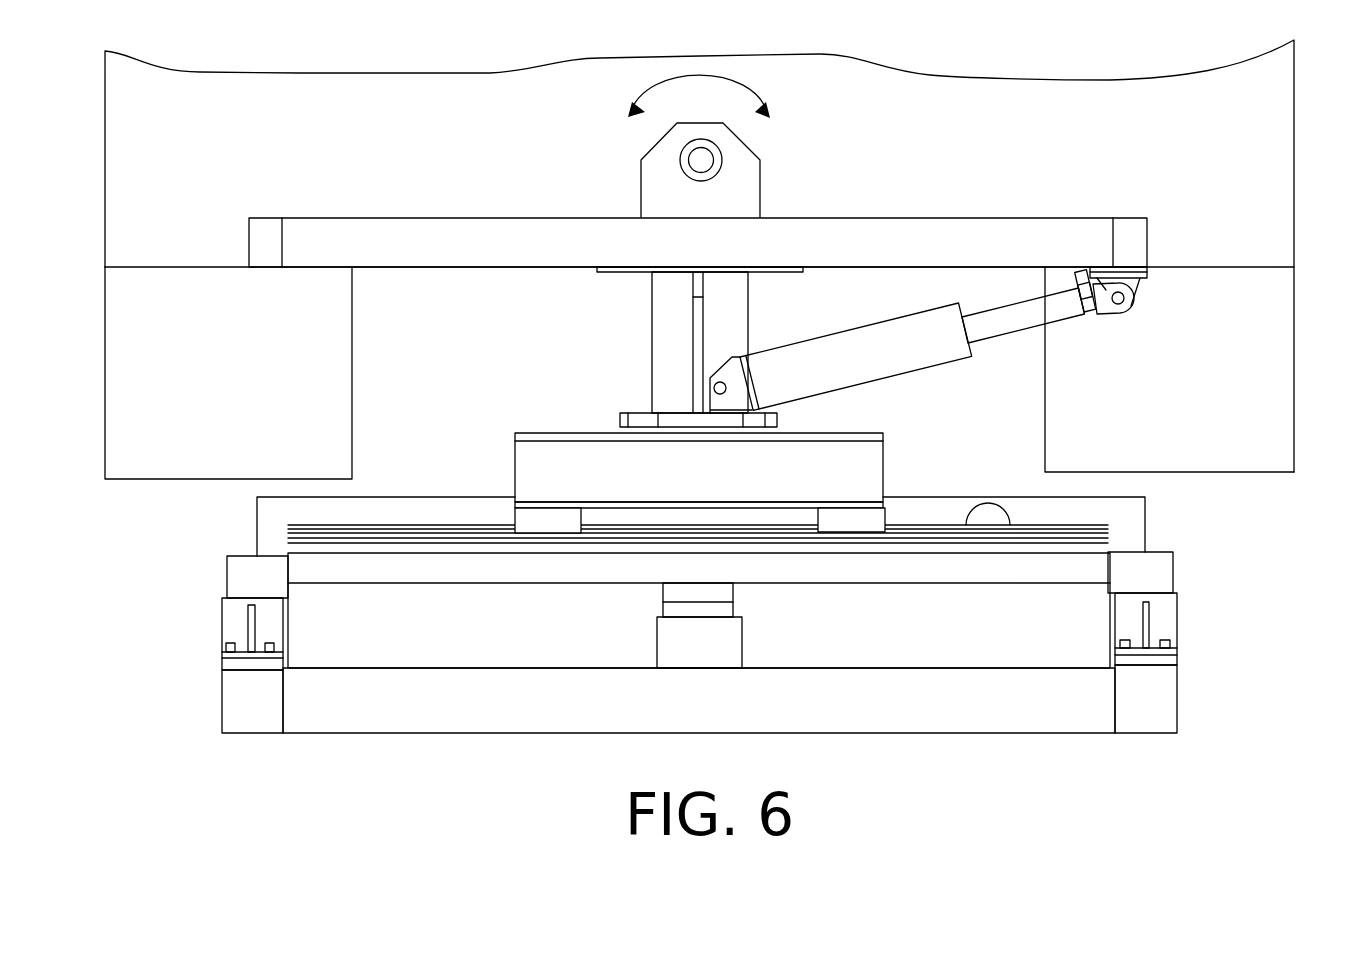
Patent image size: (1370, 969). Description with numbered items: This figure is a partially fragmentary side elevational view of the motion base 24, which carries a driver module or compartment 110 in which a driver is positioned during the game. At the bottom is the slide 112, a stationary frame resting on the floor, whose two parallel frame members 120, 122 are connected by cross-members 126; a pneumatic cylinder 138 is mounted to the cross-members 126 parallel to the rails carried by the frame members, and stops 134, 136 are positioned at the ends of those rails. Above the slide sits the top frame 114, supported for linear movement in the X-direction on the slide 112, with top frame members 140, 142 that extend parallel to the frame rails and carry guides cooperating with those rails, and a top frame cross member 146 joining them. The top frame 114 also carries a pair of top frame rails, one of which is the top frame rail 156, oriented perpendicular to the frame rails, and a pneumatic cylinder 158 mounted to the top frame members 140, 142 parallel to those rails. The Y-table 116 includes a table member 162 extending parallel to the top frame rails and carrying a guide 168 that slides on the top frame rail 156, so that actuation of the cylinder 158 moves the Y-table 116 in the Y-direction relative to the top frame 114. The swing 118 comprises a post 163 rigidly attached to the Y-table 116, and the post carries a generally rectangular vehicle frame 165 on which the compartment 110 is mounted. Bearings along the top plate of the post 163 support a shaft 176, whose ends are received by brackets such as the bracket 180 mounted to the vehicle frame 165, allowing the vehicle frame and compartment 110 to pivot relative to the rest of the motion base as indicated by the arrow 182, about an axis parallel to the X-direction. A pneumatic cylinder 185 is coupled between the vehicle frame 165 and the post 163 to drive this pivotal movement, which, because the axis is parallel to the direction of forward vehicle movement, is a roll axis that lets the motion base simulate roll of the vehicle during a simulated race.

The driver module or compartment 110 is at (1295, 157).
The swing 118 is at (698, 172).
The vehicle frame 165 is at (1027, 232).
The bracket 180 is at (663, 197).
The shaft 176 is at (702, 159).
The arrow indicating pivotal movement 182 is at (727, 78).
The post 163 is at (690, 339).
The pneumatic cylinder 185 is at (875, 368).
The Y-table 116 is at (747, 525).
The table member 162 is at (855, 467).
The pneumatic cylinder 158 is at (1132, 521).
The top frame cross member 146 is at (878, 565).
The guide 168 is at (540, 525).
The top frame rail 156 is at (1013, 523).
The top frame 114 is at (703, 541).
The top frame member 140 is at (227, 580).
The top frame member 142 is at (1172, 570).
The motion base 24 is at (632, 612).
The stop 134 is at (232, 617).
The stop 136 is at (1146, 629).
The slide 112 is at (696, 689).
The cross-member 126 is at (978, 710).
The frame member 120 is at (235, 700).
The frame member 122 is at (1180, 702).
The pneumatic cylinder 138 is at (720, 642).